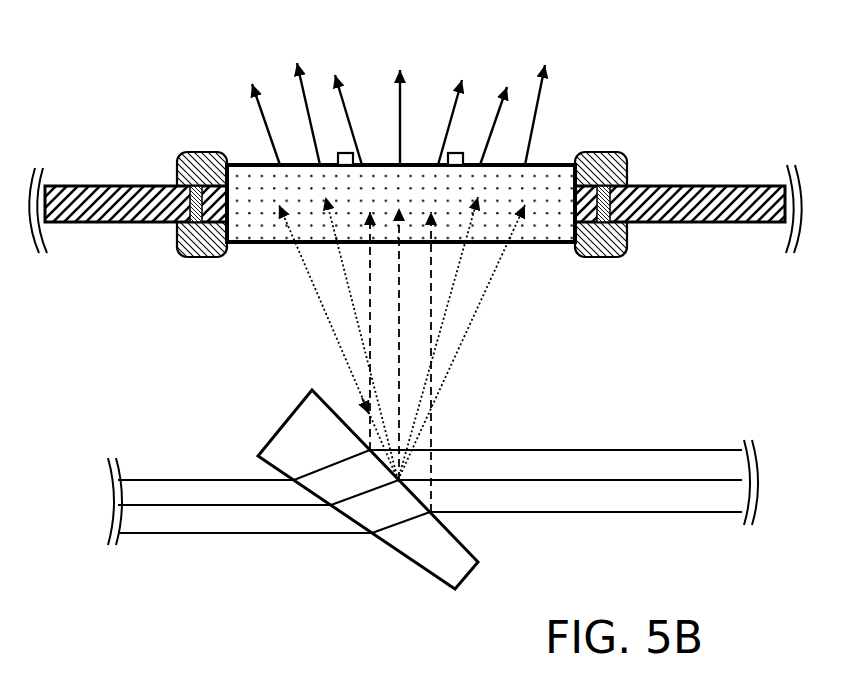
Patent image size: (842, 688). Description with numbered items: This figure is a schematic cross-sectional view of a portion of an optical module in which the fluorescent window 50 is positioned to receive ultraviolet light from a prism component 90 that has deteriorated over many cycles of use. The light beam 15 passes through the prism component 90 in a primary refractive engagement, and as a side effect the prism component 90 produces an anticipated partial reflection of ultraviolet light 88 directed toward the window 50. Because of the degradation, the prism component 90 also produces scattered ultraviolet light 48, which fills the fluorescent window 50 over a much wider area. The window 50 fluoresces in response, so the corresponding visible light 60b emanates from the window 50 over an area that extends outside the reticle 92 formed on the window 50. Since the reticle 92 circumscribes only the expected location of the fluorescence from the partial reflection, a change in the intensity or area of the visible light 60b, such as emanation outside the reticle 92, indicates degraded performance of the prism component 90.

The light beam 15 is at (697, 452).
The scattered ultraviolet light 48 is at (492, 293).
The fluorescent window 50 is at (537, 167).
The visible light 60b is at (265, 118).
The partial reflection of ultraviolet light 88 is at (433, 435).
The prism component 90 is at (287, 429).
The reticle 92 is at (458, 153).